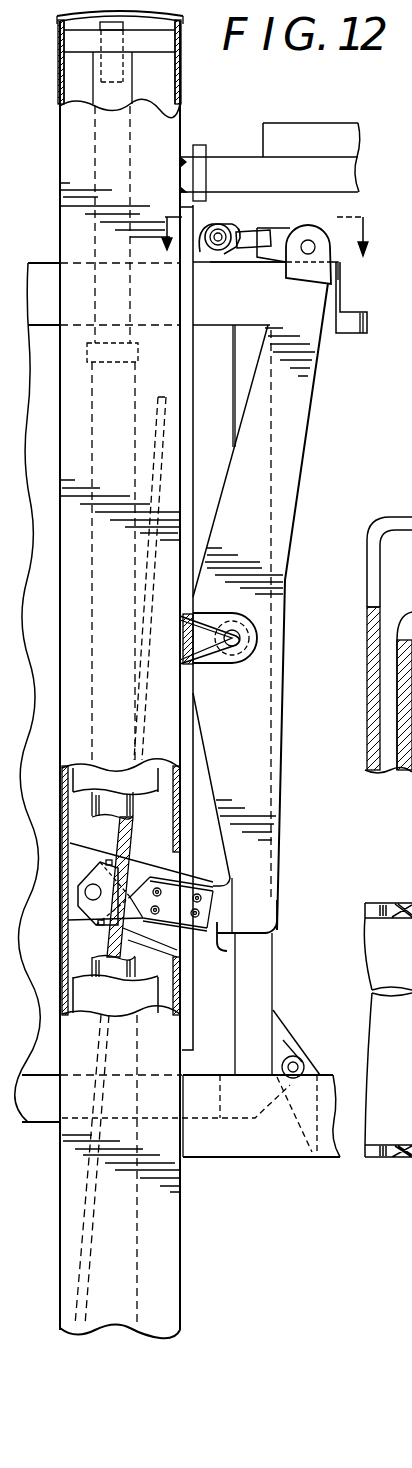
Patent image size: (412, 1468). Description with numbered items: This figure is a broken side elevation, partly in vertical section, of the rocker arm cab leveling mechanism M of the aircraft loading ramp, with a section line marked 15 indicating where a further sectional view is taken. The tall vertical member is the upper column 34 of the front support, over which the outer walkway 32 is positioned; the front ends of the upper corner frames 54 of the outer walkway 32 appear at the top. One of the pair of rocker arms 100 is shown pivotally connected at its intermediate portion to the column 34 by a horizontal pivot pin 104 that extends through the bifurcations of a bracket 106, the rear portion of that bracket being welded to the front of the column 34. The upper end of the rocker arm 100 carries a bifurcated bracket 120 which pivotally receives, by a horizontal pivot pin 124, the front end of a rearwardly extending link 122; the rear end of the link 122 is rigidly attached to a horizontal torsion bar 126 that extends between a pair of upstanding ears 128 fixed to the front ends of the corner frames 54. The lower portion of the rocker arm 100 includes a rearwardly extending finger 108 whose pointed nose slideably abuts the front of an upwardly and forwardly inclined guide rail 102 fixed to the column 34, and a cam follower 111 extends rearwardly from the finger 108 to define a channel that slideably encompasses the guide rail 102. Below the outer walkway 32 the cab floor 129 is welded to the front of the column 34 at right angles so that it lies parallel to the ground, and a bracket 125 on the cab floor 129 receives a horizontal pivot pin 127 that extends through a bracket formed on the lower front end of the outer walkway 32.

The outer walkway 32 is at (45, 262).
The upper column means 34 is at (186, 114).
The upper corner frames 54 is at (233, 640).
The rocker arm 100 is at (304, 441).
The rocker arm cab leveling mechanism M is at (257, 530).
The guide rail 102 is at (133, 828).
The horizontal pivot pin 104 is at (235, 640).
The bracket 106 is at (216, 624).
The finger 108 is at (227, 951).
The cam follower 111 is at (90, 870).
The bifurcated bracket 120 is at (338, 282).
The link 122 is at (283, 232).
The horizontal pivot pin 124 is at (312, 245).
The bracket 125 is at (305, 1068).
The torsion bar 126 is at (221, 230).
The horizontal pivot pin 127 is at (305, 1062).
The upstanding ears 128 is at (200, 232).
The cab floor 129 is at (283, 1040).
The section line FIG. 15 is at (255, 256).